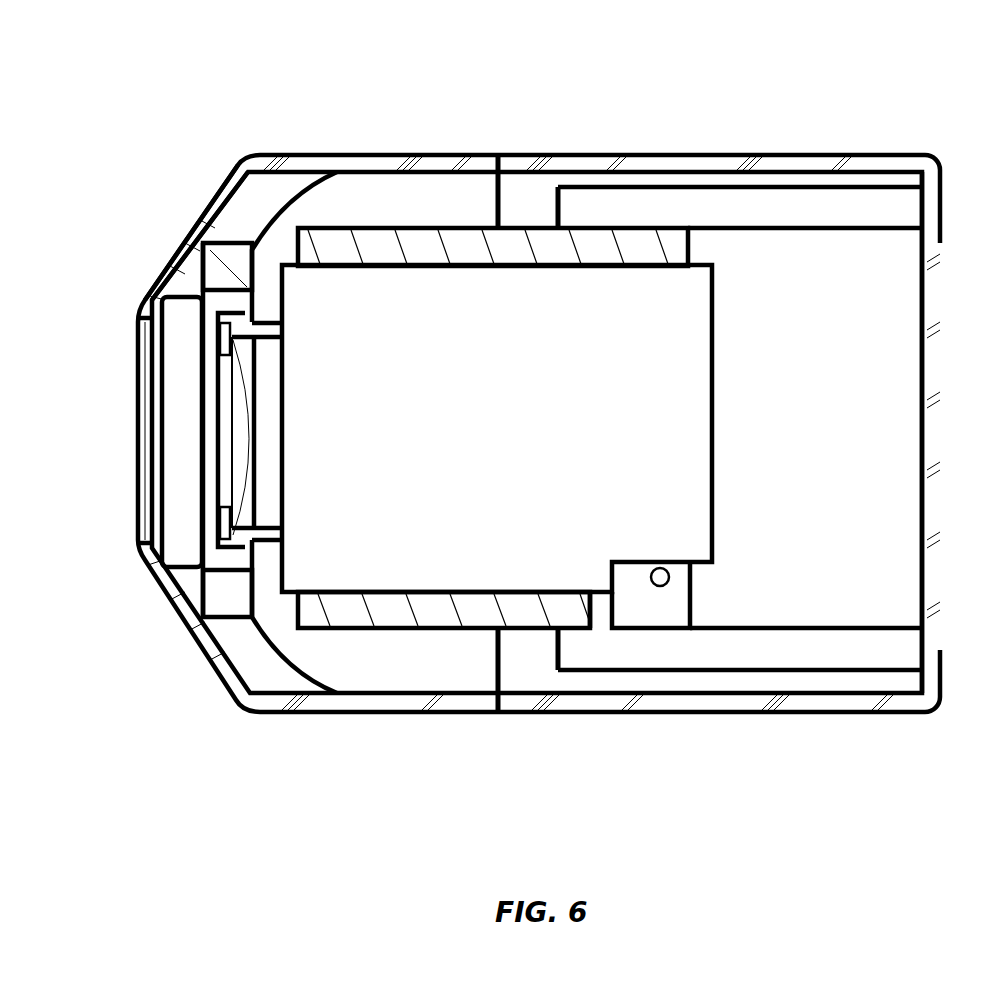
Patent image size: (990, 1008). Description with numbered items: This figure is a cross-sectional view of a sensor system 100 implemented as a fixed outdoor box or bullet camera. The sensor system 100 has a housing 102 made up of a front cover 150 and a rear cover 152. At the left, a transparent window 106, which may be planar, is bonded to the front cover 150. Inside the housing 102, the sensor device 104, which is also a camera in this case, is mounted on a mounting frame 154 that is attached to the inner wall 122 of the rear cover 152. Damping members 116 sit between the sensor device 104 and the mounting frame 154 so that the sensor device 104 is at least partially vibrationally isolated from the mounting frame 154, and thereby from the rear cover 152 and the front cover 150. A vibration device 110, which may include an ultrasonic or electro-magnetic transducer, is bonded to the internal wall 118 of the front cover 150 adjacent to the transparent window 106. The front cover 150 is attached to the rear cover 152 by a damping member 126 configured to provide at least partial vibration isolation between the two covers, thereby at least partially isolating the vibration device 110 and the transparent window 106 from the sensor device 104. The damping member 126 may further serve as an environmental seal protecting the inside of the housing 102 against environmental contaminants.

The sensor system 100 is at (200, 36).
The housing 102 is at (255, 760).
The sensor device 104 is at (593, 567).
The transparent window 106 is at (135, 392).
The vibration device 110 is at (223, 585).
The damping members 116 is at (620, 247).
The internal wall 118 is at (218, 643).
The inner wall 122 is at (757, 178).
The damping member 126 is at (492, 193).
The front cover 150 is at (205, 192).
The rear cover 152 is at (857, 150).
The mounting frame 154 is at (562, 195).